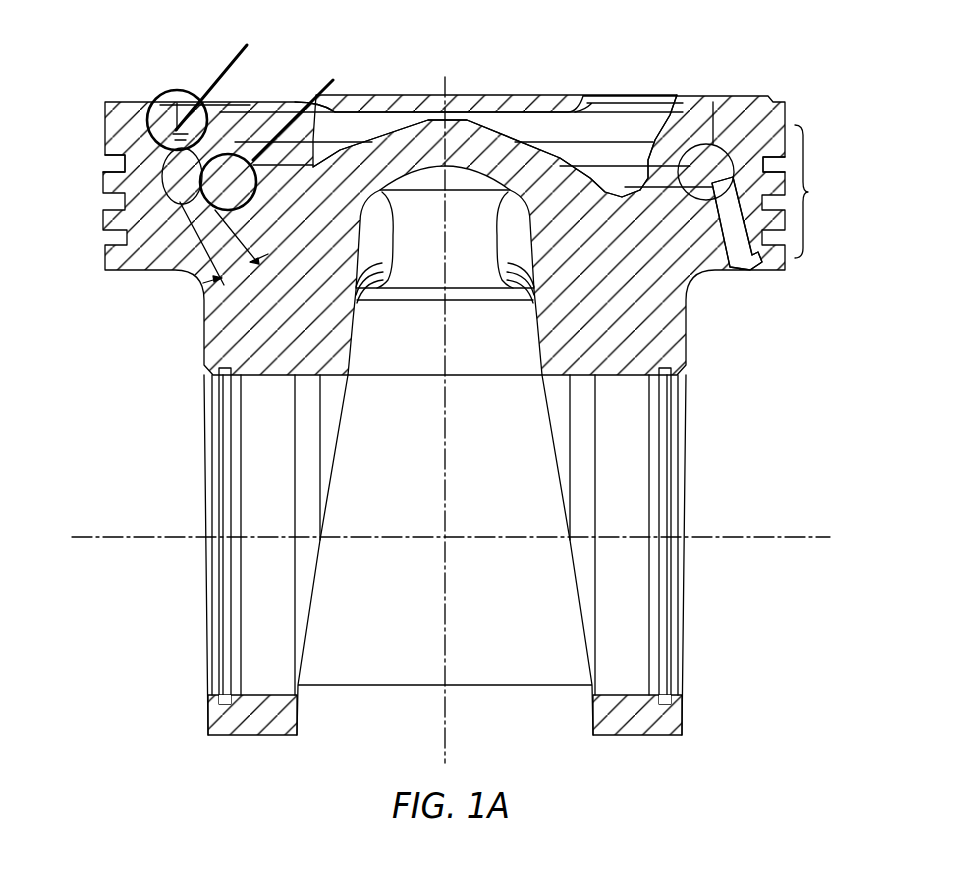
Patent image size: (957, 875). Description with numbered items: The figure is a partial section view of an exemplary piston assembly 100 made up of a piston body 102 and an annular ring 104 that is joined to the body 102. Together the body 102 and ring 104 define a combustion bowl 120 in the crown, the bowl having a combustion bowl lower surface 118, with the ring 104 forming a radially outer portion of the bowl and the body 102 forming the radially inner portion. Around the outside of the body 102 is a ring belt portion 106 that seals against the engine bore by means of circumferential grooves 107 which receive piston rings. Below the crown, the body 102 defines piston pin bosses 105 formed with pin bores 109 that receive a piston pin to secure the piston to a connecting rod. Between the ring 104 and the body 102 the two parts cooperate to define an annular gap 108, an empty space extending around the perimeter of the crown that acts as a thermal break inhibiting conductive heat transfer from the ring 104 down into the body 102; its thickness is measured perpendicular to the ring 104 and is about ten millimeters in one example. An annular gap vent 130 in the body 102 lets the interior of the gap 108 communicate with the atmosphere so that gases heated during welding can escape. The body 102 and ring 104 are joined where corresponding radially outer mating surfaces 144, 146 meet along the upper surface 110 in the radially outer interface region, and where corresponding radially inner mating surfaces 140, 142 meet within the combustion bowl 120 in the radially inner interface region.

The piston assembly 100 is at (75, 73).
The piston body 102 is at (690, 277).
The annular ring 104 is at (682, 122).
The piston pin bosses 105 is at (287, 723).
The ring belt portion 106 is at (819, 191).
The circumferential grooves 107 is at (783, 170).
The annular gap 108 is at (180, 132).
The pin bores 109 is at (260, 377).
The upper surface 110 is at (148, 102).
The combustion bowl lower surface 118 is at (587, 167).
The combustion bowl 120 is at (539, 128).
The annular gap vent 130 is at (735, 235).
The radially inner mating surface of the body 140 is at (233, 165).
The radially inner mating surface of the ring 142 is at (197, 282).
The radially outer mating surface of the body 144 is at (177, 112).
The radially outer mating surface of the ring 146 is at (175, 121).